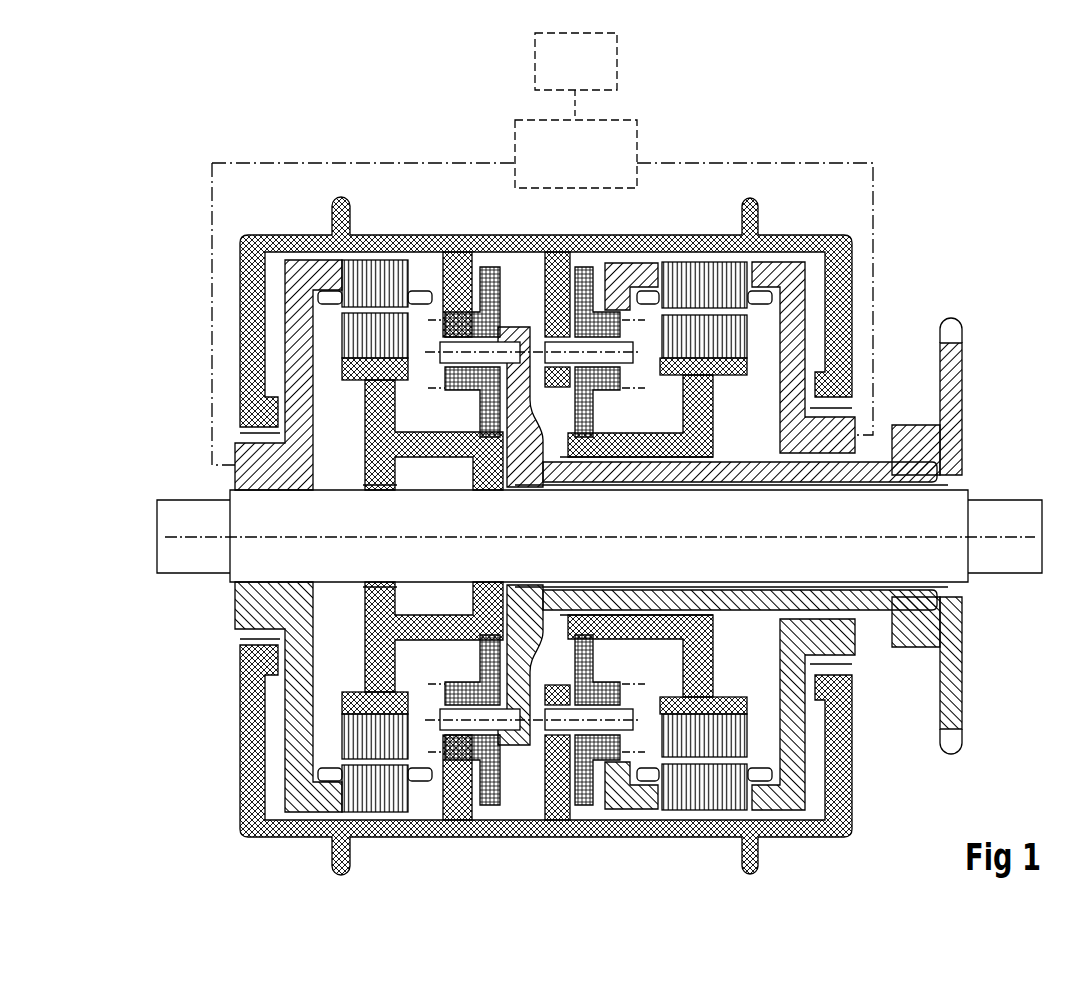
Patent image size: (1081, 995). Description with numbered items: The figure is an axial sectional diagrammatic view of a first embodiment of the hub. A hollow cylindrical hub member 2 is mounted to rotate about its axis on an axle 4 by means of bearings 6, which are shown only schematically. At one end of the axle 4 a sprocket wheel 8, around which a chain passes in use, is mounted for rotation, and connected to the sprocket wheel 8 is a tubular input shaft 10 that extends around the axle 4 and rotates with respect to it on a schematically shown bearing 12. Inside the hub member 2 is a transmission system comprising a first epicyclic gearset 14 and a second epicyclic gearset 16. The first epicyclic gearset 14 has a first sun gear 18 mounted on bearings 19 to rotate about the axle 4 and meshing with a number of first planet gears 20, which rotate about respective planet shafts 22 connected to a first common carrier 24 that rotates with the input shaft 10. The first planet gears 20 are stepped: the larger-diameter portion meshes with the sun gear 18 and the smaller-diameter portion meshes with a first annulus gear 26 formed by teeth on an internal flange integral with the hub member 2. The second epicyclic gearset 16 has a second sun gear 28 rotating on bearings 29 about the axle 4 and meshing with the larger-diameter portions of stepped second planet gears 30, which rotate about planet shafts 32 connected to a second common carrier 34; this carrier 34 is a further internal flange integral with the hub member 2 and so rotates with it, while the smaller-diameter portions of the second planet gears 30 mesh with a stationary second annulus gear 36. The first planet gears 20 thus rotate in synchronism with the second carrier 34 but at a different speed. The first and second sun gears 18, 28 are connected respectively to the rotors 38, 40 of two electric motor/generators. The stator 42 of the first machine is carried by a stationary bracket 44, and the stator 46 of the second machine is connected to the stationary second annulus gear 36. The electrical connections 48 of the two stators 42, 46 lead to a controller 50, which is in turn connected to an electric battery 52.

The hub member 2 is at (840, 272).
The axle 4 is at (205, 520).
The bearings 6 is at (255, 434).
The sprocket wheel 8 is at (945, 440).
The tubular input shaft 10 is at (867, 472).
The bearing 12 is at (910, 485).
The first epicyclic gearset 14 is at (464, 402).
The second epicyclic gearset 16 is at (607, 402).
The first sun gear 18 is at (380, 428).
The bearings 19 is at (380, 485).
The first planet gears 20 is at (490, 295).
The planet shafts 22 is at (463, 382).
The first common carrier 24 is at (535, 470).
The first annulus gear 26 is at (462, 298).
The second sun gear 28 is at (698, 400).
The bearings 29 is at (685, 457).
The second planet gears 30 is at (582, 292).
The planet shafts 32 is at (596, 382).
The second common carrier 34 is at (552, 303).
The second annulus gear 36 is at (638, 273).
The rotor 38 is at (360, 330).
The rotor 40 is at (718, 336).
The stator 42 is at (355, 272).
The stationary bracket 44 is at (305, 272).
The stator 46 is at (732, 280).
The electrical connections 48 is at (872, 267).
The controller 50 is at (576, 139).
The electric battery 52 is at (576, 61).